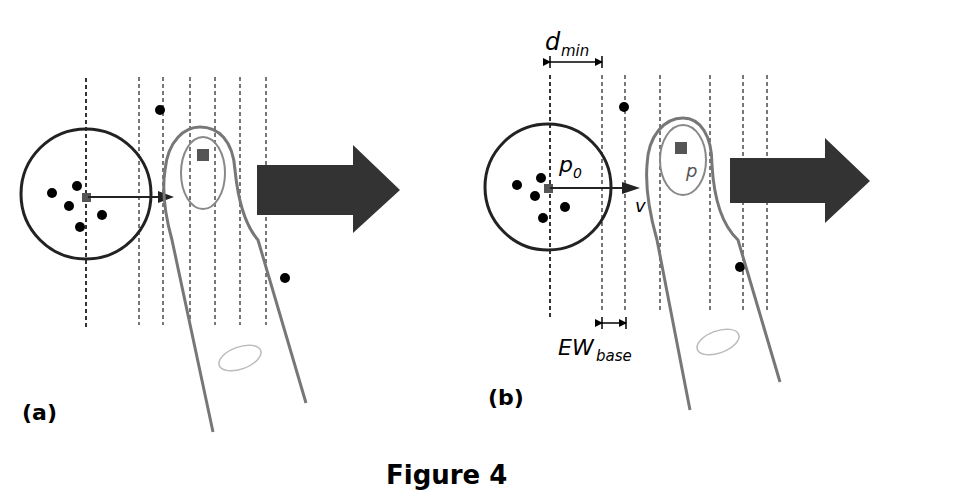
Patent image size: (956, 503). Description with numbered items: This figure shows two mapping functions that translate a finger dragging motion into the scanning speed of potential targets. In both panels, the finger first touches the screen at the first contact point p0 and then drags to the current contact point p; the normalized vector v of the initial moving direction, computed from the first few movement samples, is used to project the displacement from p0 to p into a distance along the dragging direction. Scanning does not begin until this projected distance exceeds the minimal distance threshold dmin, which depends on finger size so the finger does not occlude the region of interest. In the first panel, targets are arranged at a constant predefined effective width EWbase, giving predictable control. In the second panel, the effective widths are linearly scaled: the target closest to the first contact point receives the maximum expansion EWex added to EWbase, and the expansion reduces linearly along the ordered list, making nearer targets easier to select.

The first contact point position p0 is at (86, 194).
The normalized vector of the initial moving direction v is at (135, 205).
The current contact point position p is at (203, 173).
The minimal distance threshold dmin is at (86, 70).
The predefined effective width EWbase is at (215, 70).
The maximum expansion of effective width EWex is at (710, 70).